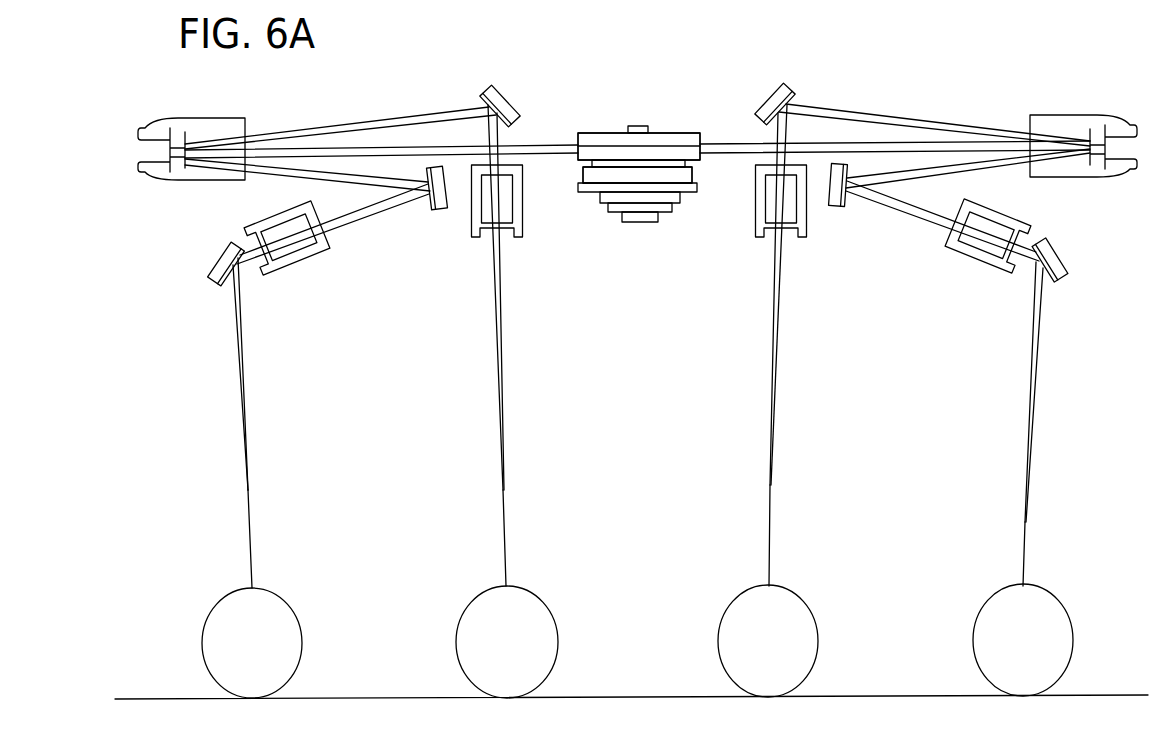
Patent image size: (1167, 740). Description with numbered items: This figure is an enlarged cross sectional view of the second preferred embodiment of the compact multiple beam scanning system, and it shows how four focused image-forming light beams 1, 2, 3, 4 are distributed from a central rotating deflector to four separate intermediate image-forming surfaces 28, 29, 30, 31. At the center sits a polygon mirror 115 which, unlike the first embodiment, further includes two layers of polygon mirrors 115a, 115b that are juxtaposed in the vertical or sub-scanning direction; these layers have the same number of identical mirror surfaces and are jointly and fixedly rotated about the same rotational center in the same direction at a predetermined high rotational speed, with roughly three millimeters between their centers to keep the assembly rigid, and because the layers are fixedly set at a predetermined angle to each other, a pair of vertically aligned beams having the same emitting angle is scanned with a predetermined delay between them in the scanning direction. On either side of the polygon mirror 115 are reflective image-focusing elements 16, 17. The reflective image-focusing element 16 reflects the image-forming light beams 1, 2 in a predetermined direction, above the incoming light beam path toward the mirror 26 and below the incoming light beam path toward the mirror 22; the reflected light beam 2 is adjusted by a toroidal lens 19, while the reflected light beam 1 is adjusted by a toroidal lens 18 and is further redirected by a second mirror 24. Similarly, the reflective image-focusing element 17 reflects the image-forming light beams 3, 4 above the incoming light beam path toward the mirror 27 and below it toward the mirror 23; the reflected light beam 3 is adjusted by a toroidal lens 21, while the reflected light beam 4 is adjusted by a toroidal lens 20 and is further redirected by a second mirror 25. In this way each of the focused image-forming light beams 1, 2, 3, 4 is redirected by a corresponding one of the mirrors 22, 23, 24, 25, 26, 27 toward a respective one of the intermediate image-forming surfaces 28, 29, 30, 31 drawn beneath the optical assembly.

The image-forming light beam 1 is at (247, 505).
The image-forming light beam 2 is at (503, 490).
The image-forming light beam 3 is at (770, 485).
The image-forming light beam 4 is at (1025, 522).
The reflective image-focusing element 16 is at (220, 118).
The reflective image-focusing element 17 is at (1080, 116).
The toroidal lens 18 is at (275, 278).
The toroidal lens 19 is at (472, 231).
The toroidal lens 20 is at (965, 258).
The toroidal lens 21 is at (757, 227).
The mirror 22 is at (440, 212).
The mirror 23 is at (833, 209).
The second mirror 24 is at (222, 256).
The second mirror 25 is at (1064, 251).
The mirror 26 is at (500, 92).
The mirror 27 is at (774, 90).
The intermediate image-forming surface 28 is at (215, 605).
The intermediate image-forming surface 29 is at (547, 603).
The intermediate image-forming surface 30 is at (818, 623).
The intermediate image-forming surface 31 is at (1070, 620).
The polygon mirror 115 is at (617, 115).
The polygon mirror layer 115a is at (700, 107).
The polygon mirror layer 115b is at (700, 160).